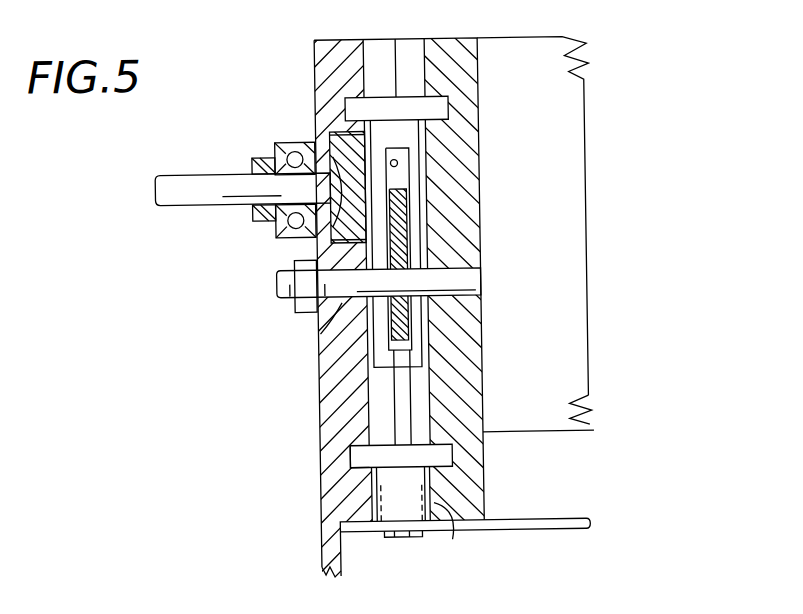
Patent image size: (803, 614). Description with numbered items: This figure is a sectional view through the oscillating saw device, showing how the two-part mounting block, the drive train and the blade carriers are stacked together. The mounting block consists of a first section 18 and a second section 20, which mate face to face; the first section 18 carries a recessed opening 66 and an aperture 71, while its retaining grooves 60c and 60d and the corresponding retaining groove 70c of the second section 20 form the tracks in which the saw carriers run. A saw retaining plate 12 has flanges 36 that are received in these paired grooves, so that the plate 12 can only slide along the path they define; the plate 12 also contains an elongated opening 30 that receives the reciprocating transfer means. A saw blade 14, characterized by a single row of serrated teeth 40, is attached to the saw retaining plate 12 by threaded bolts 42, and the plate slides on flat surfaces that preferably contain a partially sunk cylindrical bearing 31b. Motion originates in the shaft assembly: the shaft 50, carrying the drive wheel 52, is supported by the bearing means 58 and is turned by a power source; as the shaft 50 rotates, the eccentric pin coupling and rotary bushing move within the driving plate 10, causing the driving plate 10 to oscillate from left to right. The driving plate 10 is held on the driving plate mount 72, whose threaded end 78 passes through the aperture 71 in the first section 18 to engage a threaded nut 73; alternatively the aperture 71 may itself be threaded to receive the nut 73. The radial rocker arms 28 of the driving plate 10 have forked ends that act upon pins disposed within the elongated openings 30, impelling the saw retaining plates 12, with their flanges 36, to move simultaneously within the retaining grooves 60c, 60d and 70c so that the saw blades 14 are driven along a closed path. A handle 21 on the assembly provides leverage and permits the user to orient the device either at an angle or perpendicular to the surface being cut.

The first section 18 is at (336, 42).
The second section 20 is at (469, 57).
The saw blade 14 is at (611, 533).
The serrated teeth 40 is at (586, 416).
The retaining groove 60c is at (358, 104).
The retaining groove 70c is at (451, 109).
The elongated opening 30 is at (399, 179).
The saw retaining plate 12 is at (418, 353).
The threaded bolt 42 is at (404, 162).
The driving plate 10 is at (399, 235).
The radial rocker arm 28 is at (401, 385).
The flange 36 is at (363, 458).
The retaining groove 60d is at (352, 459).
The driving plate mount 72 is at (470, 286).
The threaded end 78 is at (285, 295).
The threaded nut 73 is at (303, 309).
The aperture 71 is at (320, 333).
The drive wheel 52 is at (338, 236).
The bearing means 58 is at (261, 215).
The shaft 50 is at (168, 193).
The recessed opening 66 is at (339, 134).
The partially sunk cylindrical bearing 31b is at (376, 509).
The handle 21 is at (326, 561).